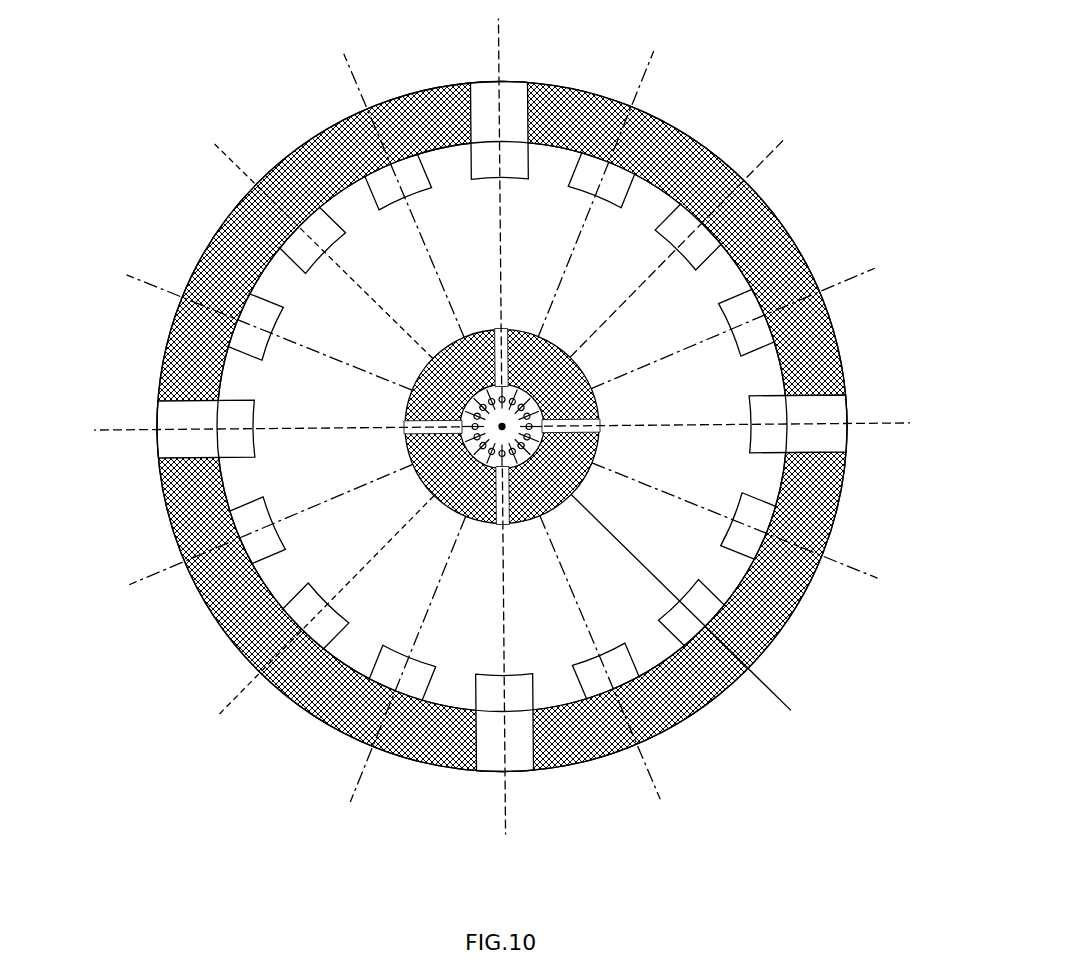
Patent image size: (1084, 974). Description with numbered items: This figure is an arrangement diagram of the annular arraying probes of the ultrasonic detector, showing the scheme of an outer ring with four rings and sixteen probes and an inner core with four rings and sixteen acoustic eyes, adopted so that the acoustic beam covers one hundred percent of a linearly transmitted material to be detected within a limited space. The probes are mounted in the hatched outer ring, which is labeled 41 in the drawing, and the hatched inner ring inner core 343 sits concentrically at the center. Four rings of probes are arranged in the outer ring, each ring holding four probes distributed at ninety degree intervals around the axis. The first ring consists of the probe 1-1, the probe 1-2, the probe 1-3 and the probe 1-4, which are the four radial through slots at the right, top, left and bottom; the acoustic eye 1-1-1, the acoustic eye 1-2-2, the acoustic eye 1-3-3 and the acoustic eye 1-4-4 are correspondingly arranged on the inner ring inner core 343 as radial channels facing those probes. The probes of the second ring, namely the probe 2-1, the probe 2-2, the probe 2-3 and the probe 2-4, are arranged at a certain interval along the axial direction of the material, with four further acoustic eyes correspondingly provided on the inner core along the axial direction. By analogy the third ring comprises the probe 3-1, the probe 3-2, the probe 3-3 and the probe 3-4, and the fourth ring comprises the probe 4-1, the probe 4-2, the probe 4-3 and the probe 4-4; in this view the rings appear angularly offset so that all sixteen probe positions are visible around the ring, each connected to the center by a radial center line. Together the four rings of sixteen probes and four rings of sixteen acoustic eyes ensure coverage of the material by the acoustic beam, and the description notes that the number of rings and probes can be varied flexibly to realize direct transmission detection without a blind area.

The outer ring 41 is at (775, 219).
The inner ring inner core 343 is at (586, 369).
The probe 1-1 is at (849, 421).
The probe 1-2 is at (502, 82).
The probe 1-3 is at (156, 429).
The probe 1-4 is at (501, 773).
The probe 2-1 is at (825, 289).
The probe 2-2 is at (360, 107).
The probe 2-3 is at (177, 559).
The probe 2-4 is at (638, 741).
The probe 3-1 is at (749, 168).
The probe 3-2 is at (249, 184).
The probe 3-3 is at (253, 672).
The probe 3-4 is at (756, 665).
The probe 4-1 is at (639, 99).
The probe 4-2 is at (181, 291).
The probe 4-3 is at (373, 748).
The probe 4-4 is at (828, 547).
The acoustic eye 1-1-1 is at (599, 413).
The acoustic eye 1-2-2 is at (505, 326).
The acoustic eye 1-3-3 is at (403, 423).
The acoustic eye 1-4-4 is at (494, 532).